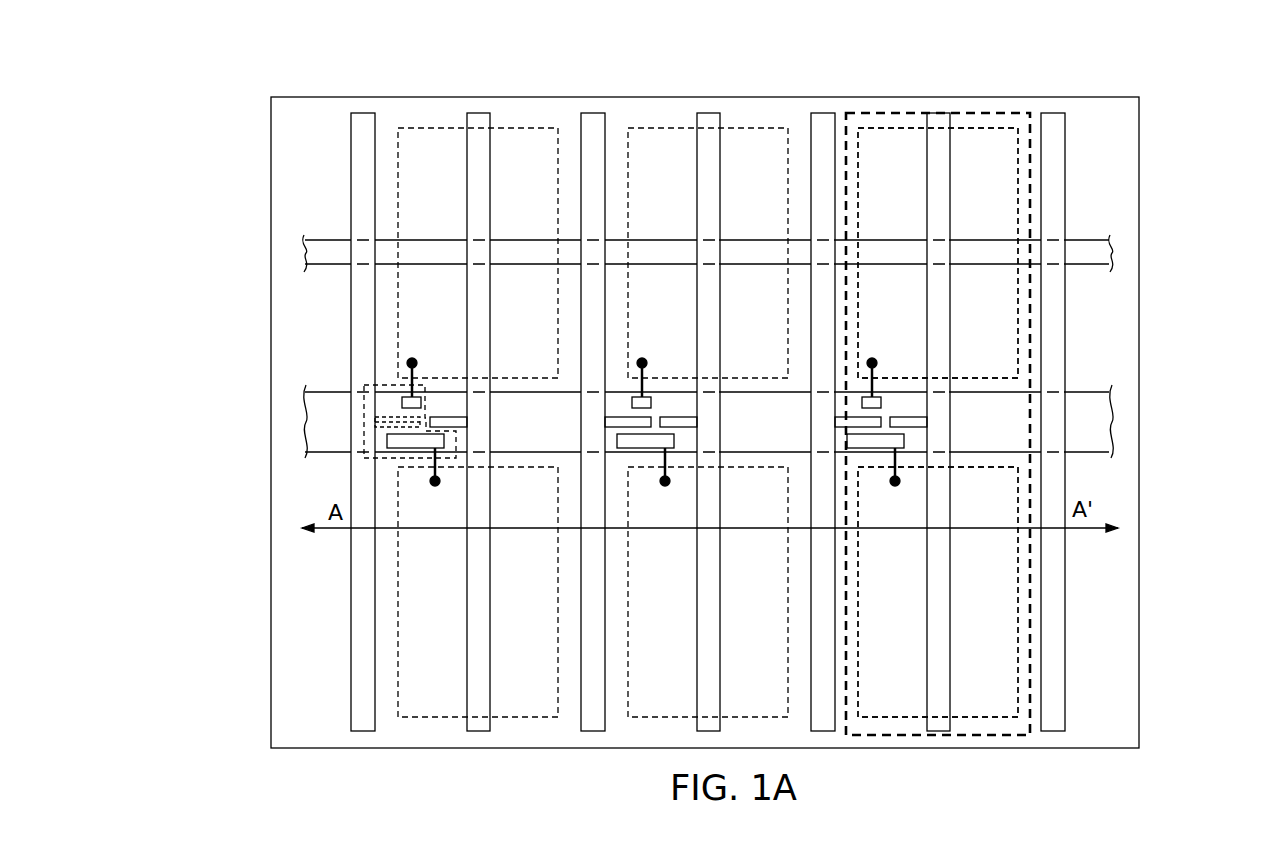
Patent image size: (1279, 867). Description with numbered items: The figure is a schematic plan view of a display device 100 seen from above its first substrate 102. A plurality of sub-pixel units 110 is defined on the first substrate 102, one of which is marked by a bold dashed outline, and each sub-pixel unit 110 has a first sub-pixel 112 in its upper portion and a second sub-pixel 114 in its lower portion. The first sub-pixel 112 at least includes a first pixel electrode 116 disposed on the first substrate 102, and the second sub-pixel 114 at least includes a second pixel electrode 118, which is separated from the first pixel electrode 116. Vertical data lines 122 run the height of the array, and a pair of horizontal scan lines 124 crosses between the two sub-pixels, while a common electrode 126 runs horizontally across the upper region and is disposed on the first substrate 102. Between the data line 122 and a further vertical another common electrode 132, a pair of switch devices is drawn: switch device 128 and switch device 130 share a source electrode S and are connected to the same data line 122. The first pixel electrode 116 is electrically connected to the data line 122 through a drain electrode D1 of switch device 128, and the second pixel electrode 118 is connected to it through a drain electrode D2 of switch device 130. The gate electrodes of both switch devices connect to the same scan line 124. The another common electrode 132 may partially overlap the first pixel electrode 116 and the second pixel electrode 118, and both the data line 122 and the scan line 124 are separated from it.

The display device 100 is at (232, 78).
The first substrate 102 is at (283, 135).
The sub-pixel unit 110 is at (1030, 152).
The first sub-pixel 112 is at (1003, 197).
The second sub-pixel 114 is at (1003, 613).
The first pixel electrode 116 is at (1057, 253).
The second pixel electrode 118 is at (1058, 592).
The data line 122 is at (363, 122).
The scan line 124 is at (320, 434).
The common electrode 126 is at (315, 253).
The switch device 128 is at (364, 388).
The switch device 130 is at (385, 450).
The another common electrode 132 is at (475, 118).
The drain electrode D1 is at (405, 398).
The drain electrode D2 is at (403, 440).
The source electrode S is at (392, 422).